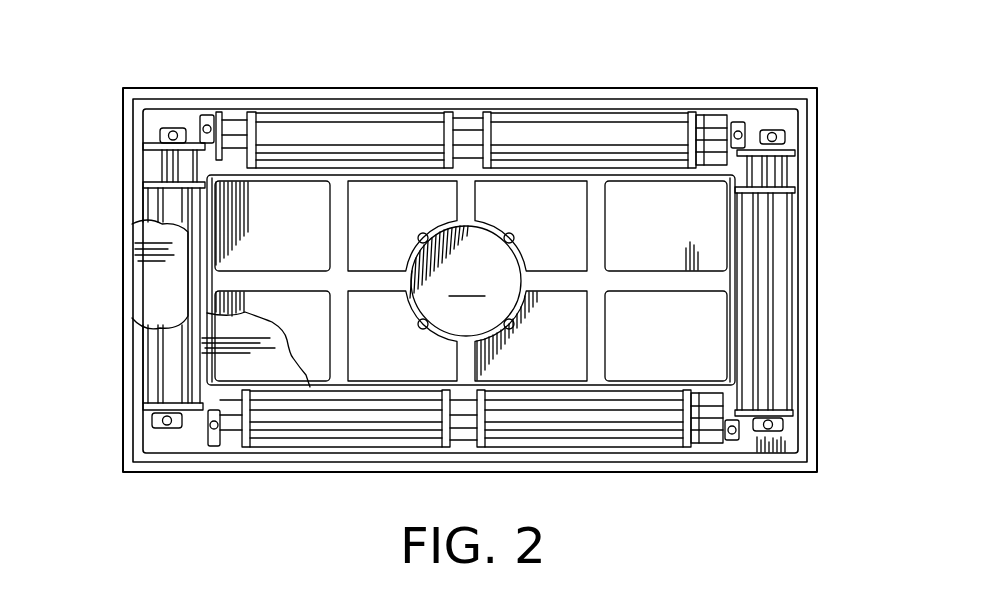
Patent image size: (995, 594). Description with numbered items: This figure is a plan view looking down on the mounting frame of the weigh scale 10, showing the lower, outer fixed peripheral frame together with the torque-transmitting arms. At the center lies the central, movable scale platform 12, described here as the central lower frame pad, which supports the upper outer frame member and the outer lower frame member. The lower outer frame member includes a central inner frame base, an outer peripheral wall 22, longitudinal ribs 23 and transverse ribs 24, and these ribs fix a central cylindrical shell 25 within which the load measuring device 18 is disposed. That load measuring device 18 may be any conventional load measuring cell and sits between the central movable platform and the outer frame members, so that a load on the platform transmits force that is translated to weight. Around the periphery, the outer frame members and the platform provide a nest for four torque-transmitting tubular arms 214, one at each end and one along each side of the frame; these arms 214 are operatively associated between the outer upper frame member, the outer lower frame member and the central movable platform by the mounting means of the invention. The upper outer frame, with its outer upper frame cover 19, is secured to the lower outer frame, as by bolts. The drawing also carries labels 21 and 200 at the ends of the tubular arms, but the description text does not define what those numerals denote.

The weigh scale 10 is at (752, 72).
The central movable scale platform 12 is at (237, 377).
The load measuring device 18 is at (760, 267).
The outer upper frame cover 19 is at (152, 315).
The bearing block 21 is at (507, 173).
The outer peripheral wall 22 is at (428, 95).
The longitudinal ribs 23 is at (333, 197).
The transverse ribs 24 is at (176, 278).
The central cylindrical shell 25 is at (525, 336).
The bearing 200 is at (199, 168).
The torque-transmitting tubular arms 214 is at (370, 135).